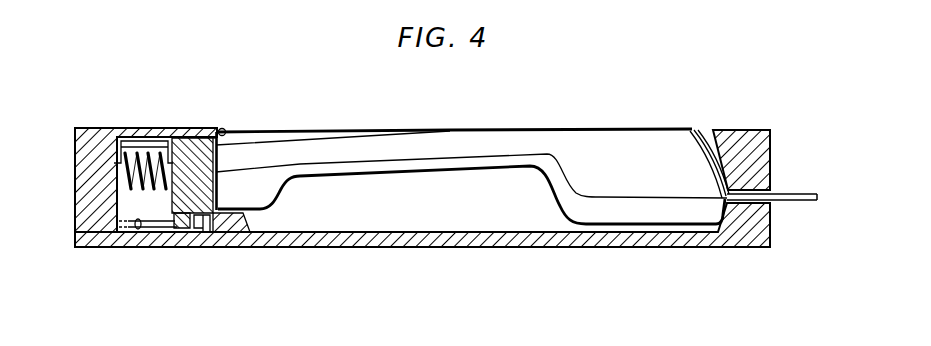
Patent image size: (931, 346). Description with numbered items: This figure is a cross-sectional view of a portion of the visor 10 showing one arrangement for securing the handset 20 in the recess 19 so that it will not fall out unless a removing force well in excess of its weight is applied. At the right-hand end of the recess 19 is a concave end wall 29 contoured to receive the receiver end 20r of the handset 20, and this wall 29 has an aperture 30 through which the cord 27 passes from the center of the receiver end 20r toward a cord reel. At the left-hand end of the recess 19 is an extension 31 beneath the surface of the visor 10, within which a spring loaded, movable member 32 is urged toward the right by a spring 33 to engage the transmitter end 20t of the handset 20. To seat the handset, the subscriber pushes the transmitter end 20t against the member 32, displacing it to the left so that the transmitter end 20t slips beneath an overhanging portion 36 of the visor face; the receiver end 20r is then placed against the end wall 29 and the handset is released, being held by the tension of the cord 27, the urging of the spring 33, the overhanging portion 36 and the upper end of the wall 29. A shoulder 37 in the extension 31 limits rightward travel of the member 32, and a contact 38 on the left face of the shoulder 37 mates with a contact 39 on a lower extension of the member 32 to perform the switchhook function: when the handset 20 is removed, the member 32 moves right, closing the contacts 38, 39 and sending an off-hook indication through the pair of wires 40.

The visor 10 is at (80, 149).
The recess 19 is at (436, 210).
The handset 20 is at (454, 145).
The transmitter end 20t is at (240, 177).
The receiver end 20r is at (658, 147).
The cord 27 is at (800, 202).
The concave end wall 29 is at (737, 152).
The aperture 30 is at (747, 248).
The extension of the recess 31 is at (146, 148).
The movable member 32 is at (188, 150).
The spring 33 is at (123, 156).
The overhanging portion 36 is at (219, 126).
The shoulder 37 is at (233, 234).
The contact 38 is at (200, 229).
The contact 39 is at (190, 229).
The pair of wires 40 is at (144, 238).